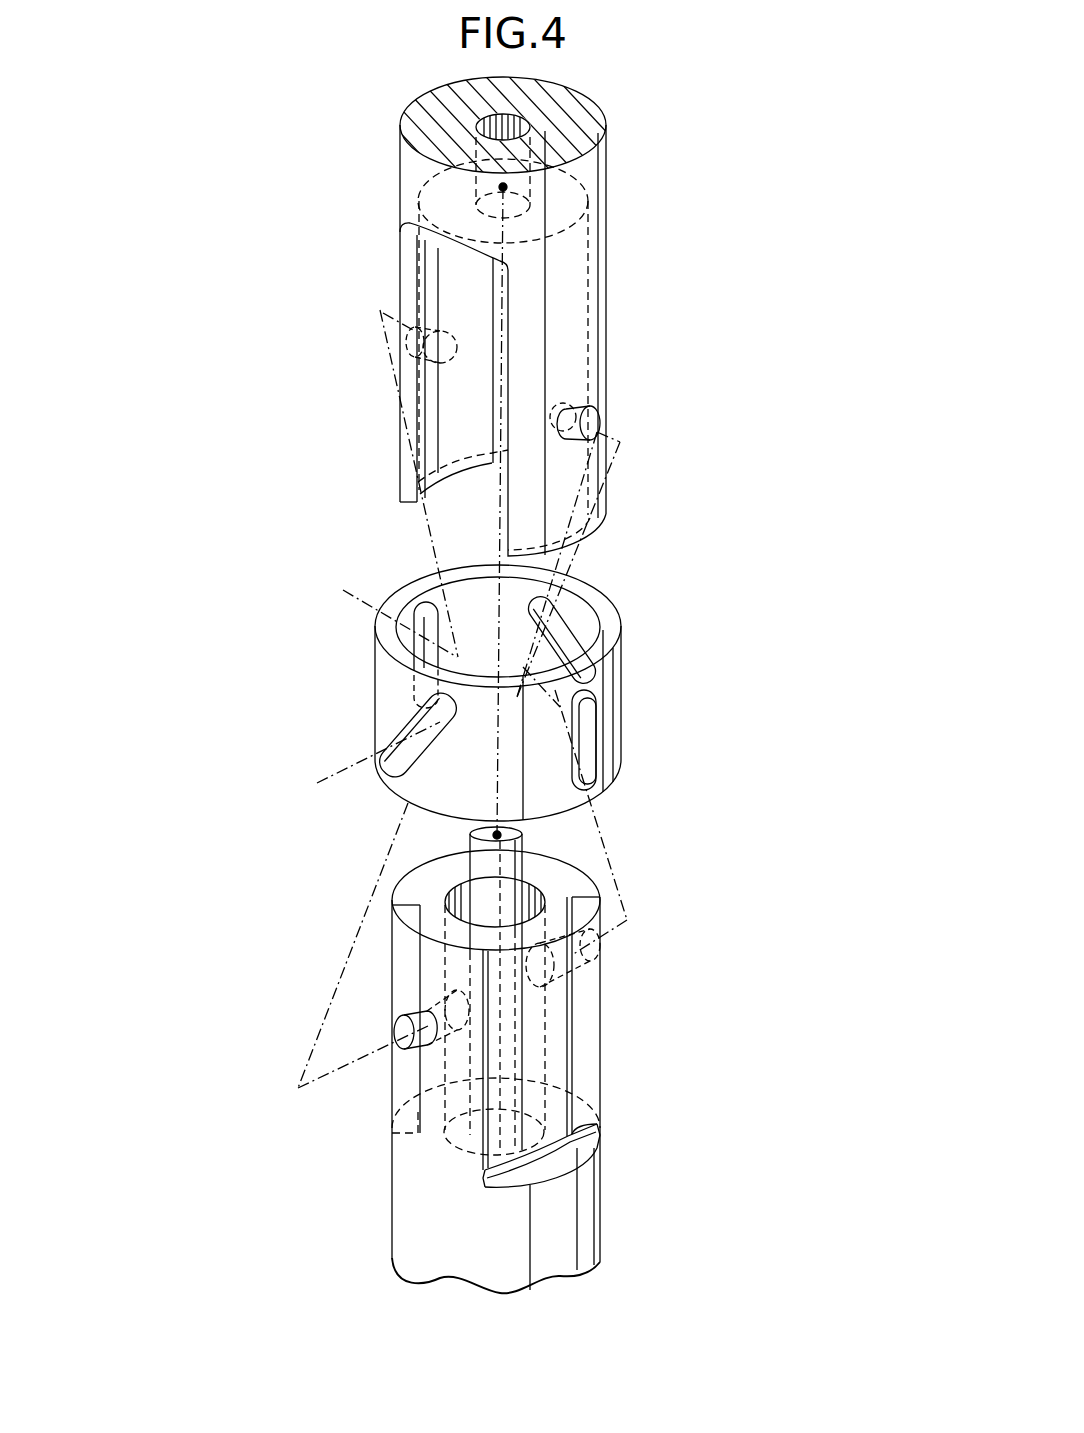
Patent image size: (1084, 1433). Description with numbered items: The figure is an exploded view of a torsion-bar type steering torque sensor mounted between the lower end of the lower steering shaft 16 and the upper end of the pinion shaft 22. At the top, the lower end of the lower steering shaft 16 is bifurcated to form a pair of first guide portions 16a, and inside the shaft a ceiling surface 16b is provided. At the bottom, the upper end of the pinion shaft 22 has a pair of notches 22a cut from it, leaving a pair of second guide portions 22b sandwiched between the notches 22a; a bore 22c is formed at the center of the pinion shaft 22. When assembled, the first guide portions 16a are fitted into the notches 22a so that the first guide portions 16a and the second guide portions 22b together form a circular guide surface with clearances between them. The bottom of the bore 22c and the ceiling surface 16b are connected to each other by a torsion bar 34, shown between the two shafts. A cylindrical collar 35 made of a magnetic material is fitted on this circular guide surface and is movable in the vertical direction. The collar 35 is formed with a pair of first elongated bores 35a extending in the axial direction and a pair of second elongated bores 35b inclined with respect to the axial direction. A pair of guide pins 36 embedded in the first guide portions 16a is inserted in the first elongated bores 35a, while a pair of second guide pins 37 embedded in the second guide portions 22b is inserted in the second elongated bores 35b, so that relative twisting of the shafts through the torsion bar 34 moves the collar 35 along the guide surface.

The lower steering shaft 16 is at (622, 230).
The first guide portions 16a is at (398, 440).
The ceiling surface 16b is at (481, 228).
The guide pins 36 is at (413, 327).
The collar 35 is at (625, 680).
The first elongated bores 35a is at (427, 615).
The second elongated bores 35b is at (580, 618).
The torsion bar 34 is at (486, 851).
The pinion shaft 22 is at (605, 1077).
The notches 22a is at (405, 1100).
The second guide portions 22b is at (400, 965).
The bore 22c is at (530, 897).
The second guide pins 37 is at (400, 1033).